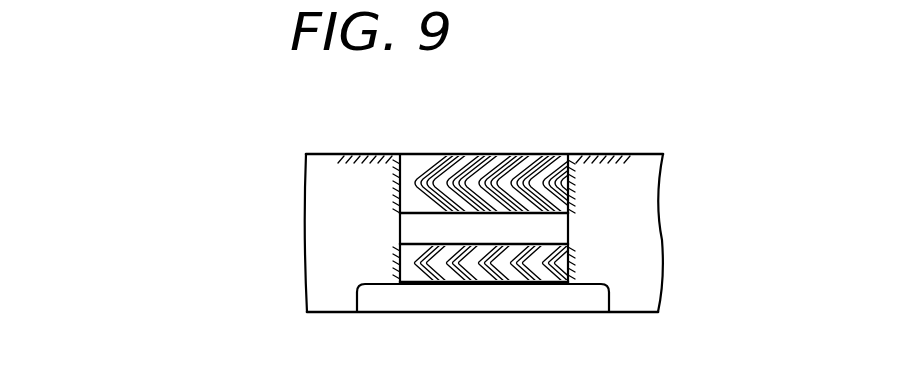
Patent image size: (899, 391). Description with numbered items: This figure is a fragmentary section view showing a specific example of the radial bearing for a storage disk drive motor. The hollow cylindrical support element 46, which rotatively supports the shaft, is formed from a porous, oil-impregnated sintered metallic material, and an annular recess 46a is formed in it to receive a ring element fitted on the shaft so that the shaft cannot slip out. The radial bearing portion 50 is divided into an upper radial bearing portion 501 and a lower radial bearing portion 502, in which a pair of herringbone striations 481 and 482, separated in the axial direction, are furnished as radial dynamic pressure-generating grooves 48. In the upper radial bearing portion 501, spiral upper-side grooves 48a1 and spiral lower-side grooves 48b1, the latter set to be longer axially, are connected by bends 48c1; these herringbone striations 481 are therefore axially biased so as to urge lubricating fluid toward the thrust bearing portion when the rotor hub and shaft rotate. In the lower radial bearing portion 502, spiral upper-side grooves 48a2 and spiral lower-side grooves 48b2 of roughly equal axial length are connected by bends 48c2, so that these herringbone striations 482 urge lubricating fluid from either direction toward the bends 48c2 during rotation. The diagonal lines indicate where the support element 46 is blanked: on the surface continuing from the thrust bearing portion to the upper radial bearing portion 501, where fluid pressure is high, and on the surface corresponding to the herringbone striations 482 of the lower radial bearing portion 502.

The hollow cylindrical support element 46 is at (637, 163).
The annular recess 46a is at (607, 302).
The radial dynamic pressure-generating grooves 48 is at (100, 145).
The herringbone striations 481 is at (198, 105).
The herringbone striations 482 is at (200, 255).
The spiral upper-side grooves 48a1 is at (432, 172).
The bends 48c1 is at (412, 185).
The spiral lower-side grooves 48b1 is at (415, 205).
The spiral upper-side grooves 48a2 is at (247, 261).
The bends 48c2 is at (405, 274).
The spiral lower-side grooves 48b2 is at (428, 270).
The radial bearing portion 50 is at (779, 165).
The upper radial bearing portion 501 is at (569, 182).
The lower radial bearing portion 502 is at (569, 263).